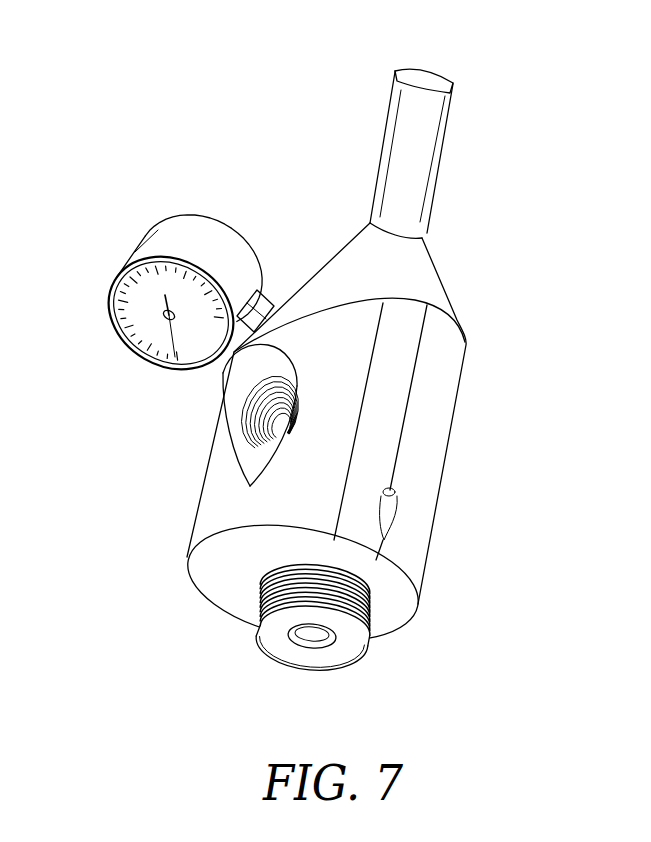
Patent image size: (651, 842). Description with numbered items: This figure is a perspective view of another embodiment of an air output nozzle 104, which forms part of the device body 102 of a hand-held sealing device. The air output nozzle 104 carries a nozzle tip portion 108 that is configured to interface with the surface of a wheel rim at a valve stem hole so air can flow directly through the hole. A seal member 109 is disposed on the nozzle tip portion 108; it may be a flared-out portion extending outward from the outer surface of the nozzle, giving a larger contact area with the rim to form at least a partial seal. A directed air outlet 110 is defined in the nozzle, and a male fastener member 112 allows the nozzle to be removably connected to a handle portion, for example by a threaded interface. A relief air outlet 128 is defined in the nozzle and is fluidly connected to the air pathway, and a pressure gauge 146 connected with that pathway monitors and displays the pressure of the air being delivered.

The device body 102 is at (379, 441).
The air output nozzle 104 is at (443, 483).
The nozzle tip portion 108 is at (440, 157).
The seal member 109 is at (396, 78).
The directed air outlet 110 is at (427, 67).
The male fastener member 112 is at (373, 640).
The relief air outlet 128 is at (247, 432).
The pressure gauge 146 is at (107, 294).